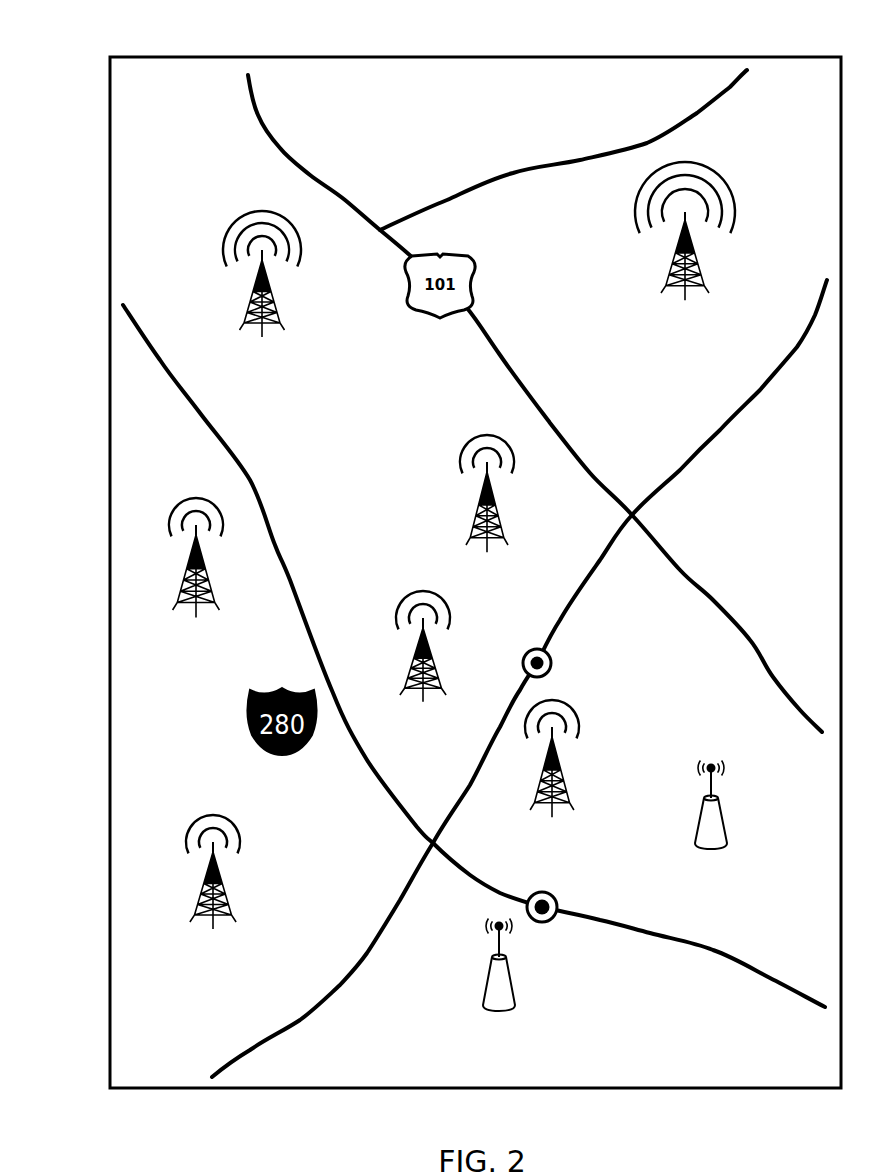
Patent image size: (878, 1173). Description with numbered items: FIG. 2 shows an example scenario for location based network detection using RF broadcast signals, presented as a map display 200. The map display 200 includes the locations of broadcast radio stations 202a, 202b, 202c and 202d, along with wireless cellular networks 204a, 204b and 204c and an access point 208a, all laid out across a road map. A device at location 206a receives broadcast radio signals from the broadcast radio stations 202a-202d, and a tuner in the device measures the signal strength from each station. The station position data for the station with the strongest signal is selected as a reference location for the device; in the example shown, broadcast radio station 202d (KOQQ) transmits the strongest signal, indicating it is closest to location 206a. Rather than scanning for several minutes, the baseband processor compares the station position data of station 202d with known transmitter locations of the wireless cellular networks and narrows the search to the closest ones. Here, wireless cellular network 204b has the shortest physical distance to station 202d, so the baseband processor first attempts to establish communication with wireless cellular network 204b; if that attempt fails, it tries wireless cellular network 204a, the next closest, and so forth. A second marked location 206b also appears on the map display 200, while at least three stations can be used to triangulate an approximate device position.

The map display 200 is at (130, 57).
The broadcast radio station 202a is at (252, 299).
The broadcast radio station 202b is at (665, 272).
The broadcast radio station 202c is at (228, 892).
The broadcast radio station 202d is at (430, 644).
The wireless cellular network 204a is at (497, 508).
The wireless cellular network 204b is at (558, 766).
The wireless cellular network 204c is at (207, 582).
The location 206a is at (553, 657).
The location marker on road 206b is at (550, 921).
The access point 208a is at (726, 806).